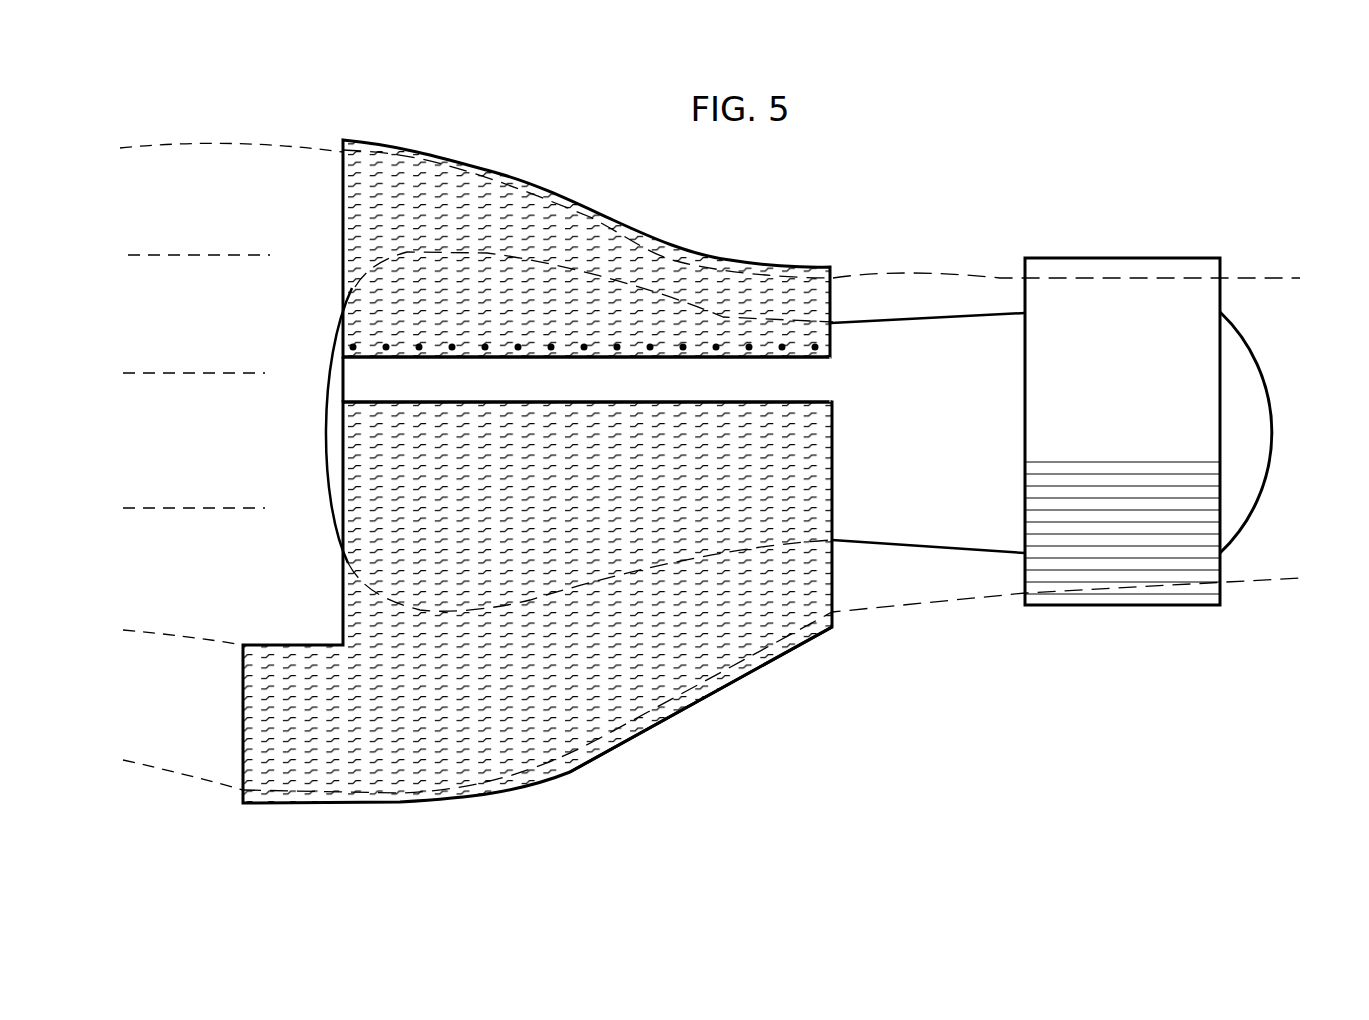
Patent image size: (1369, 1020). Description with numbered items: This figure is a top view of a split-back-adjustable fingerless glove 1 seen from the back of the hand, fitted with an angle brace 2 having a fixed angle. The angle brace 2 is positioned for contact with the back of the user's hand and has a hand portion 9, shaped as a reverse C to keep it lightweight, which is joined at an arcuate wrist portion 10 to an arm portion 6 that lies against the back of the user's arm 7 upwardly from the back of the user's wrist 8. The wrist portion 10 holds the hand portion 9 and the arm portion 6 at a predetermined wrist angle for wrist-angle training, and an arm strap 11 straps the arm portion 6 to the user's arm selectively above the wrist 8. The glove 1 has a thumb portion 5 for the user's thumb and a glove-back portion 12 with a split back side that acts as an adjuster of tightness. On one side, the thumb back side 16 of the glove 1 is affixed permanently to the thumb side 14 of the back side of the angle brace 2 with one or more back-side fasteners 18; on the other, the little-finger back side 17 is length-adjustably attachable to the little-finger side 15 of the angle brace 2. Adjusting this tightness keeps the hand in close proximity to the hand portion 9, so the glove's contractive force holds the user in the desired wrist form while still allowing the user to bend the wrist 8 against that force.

The fingerless glove 1 is at (788, 724).
The angle brace 2 is at (1292, 435).
The thumb portion 5 is at (297, 718).
The arm portion 6 is at (1232, 439).
The user's arm 7 is at (1280, 278).
The user's wrist 8 is at (900, 297).
The hand portion 9 is at (462, 395).
The wrist portion 10 is at (868, 439).
The arm strap 11 is at (1104, 439).
The glove-back portion 12 is at (497, 483).
The thumb side 14 is at (331, 517).
The little-finger side 15 is at (345, 322).
The thumb back side 16 is at (407, 400).
The little-finger back side 17 is at (407, 357).
The back-side fasteners 18 is at (382, 344).